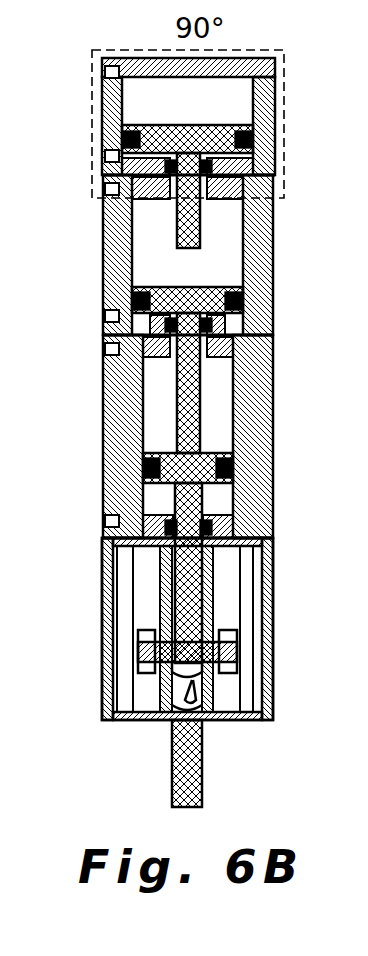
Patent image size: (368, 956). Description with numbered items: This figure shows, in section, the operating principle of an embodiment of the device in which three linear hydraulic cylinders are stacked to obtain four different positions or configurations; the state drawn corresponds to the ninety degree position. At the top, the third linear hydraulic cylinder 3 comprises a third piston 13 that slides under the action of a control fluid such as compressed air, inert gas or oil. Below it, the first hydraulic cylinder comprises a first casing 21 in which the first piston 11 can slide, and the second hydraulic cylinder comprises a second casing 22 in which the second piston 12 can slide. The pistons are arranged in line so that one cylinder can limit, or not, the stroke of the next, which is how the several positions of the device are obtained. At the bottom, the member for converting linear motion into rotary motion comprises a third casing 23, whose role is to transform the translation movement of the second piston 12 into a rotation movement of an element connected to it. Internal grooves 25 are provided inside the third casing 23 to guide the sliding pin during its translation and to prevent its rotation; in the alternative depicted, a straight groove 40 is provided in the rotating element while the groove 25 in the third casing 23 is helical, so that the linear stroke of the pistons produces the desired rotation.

The third linear hydraulic cylinder 3 is at (93, 72).
The third piston 13 is at (155, 140).
The first casing 21 is at (103, 230).
The first piston 11 is at (193, 292).
The second casing 22 is at (103, 453).
The second piston 12 is at (193, 463).
The internal grooves 25 is at (143, 571).
The third casing 23 is at (103, 625).
The straight groove 40 is at (198, 693).